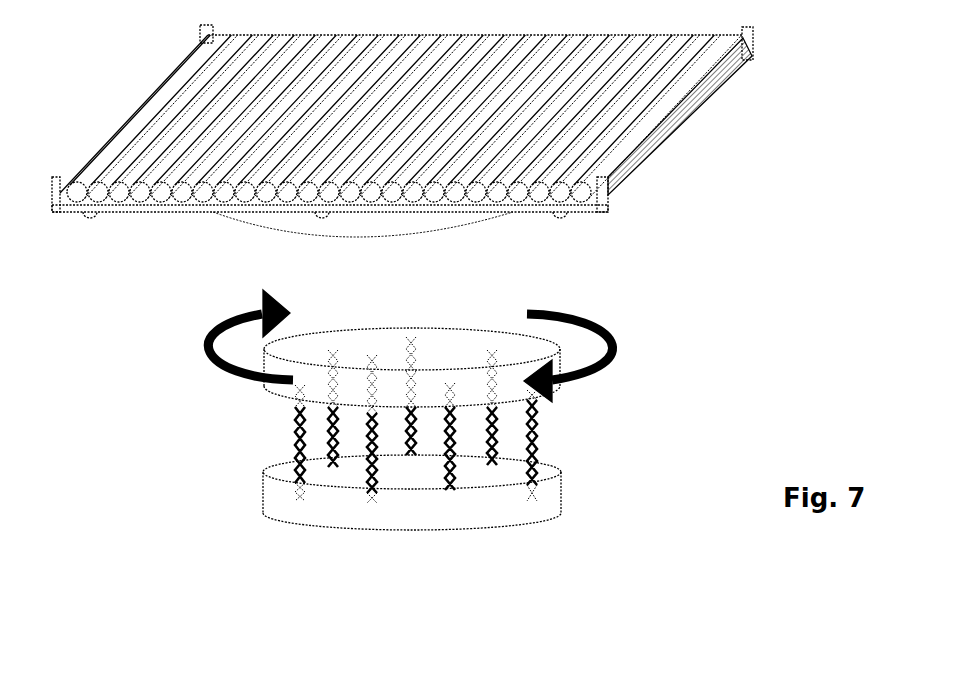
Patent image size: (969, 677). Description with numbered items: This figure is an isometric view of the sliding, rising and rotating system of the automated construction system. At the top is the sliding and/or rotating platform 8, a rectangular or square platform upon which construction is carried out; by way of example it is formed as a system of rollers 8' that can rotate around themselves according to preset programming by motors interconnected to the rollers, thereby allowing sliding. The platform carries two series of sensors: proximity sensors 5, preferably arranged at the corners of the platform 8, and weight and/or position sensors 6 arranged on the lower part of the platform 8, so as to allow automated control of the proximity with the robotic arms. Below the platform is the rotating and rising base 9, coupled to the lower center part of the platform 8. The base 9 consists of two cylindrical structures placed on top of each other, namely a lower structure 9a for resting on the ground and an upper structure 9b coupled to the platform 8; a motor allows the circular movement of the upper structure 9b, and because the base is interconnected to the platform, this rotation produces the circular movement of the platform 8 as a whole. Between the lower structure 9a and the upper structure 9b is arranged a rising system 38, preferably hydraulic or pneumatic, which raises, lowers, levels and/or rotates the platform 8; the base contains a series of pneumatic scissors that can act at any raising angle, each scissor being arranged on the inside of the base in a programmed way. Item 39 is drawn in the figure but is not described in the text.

The sliding and/or rotating platform 8 is at (397, 123).
The rollers 8' is at (685, 116).
The proximity sensors 5 is at (750, 62).
The weight and/or position sensors 6 is at (328, 216).
The rotating and rising base 9 is at (439, 230).
The upper structure 9b is at (281, 391).
The lower structure 9a is at (550, 498).
The rising system 38 is at (540, 436).
The fibre chain ends 39 is at (291, 433).